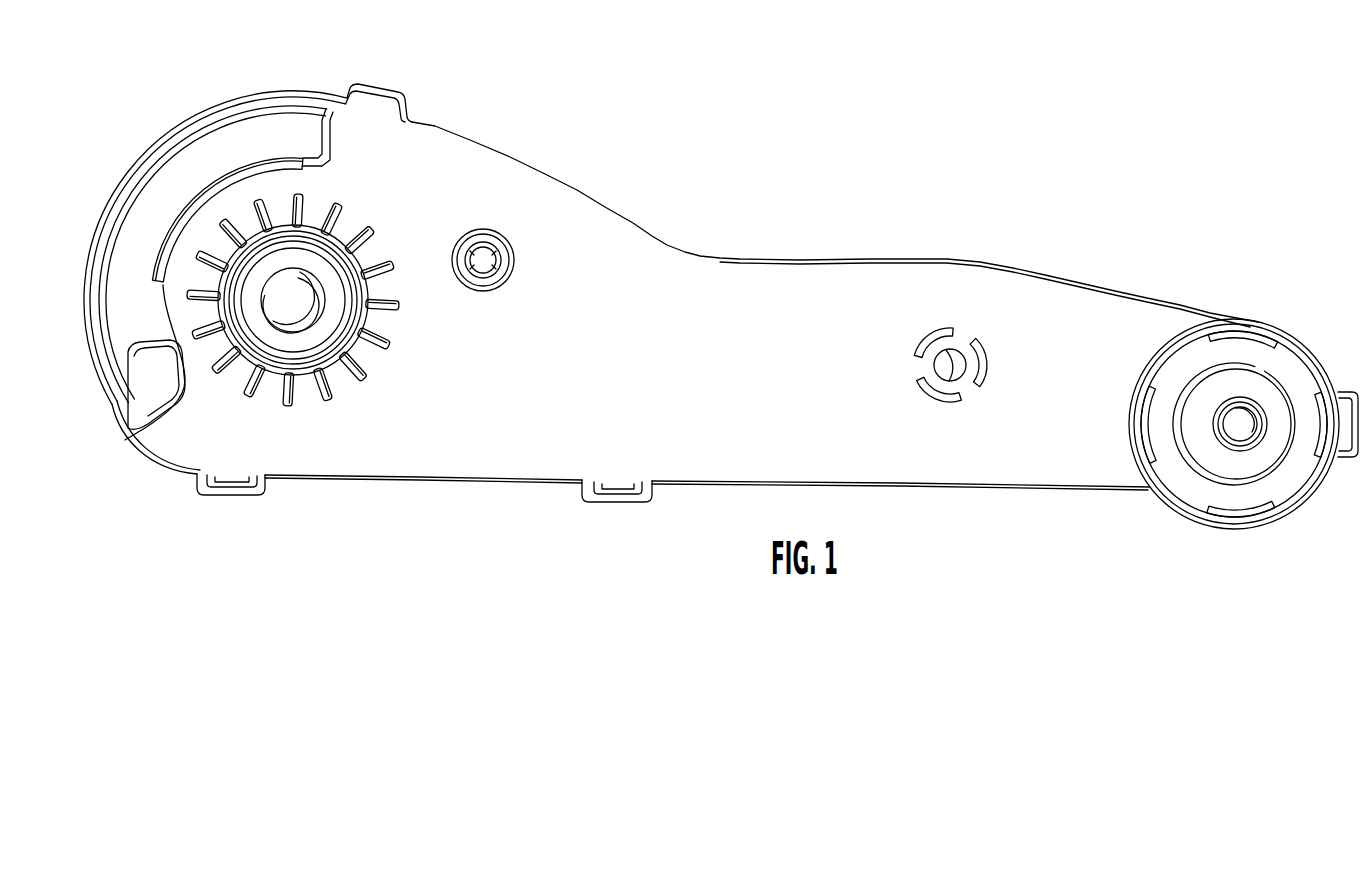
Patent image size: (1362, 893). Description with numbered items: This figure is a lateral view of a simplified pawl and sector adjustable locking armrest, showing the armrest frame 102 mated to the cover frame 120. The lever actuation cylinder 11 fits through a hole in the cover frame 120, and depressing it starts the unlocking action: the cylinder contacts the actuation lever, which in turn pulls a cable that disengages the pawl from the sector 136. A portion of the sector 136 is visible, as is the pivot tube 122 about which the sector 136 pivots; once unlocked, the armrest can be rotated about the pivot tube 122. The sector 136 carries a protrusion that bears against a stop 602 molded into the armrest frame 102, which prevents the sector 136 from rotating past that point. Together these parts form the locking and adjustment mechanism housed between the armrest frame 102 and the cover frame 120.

The armrest frame 102 is at (261, 106).
The stop 602 is at (177, 212).
The pivot tube 122 is at (289, 294).
The cover frame 120 is at (797, 293).
The lever actuation cylinder 11 is at (1258, 410).
The sector 136 is at (150, 372).